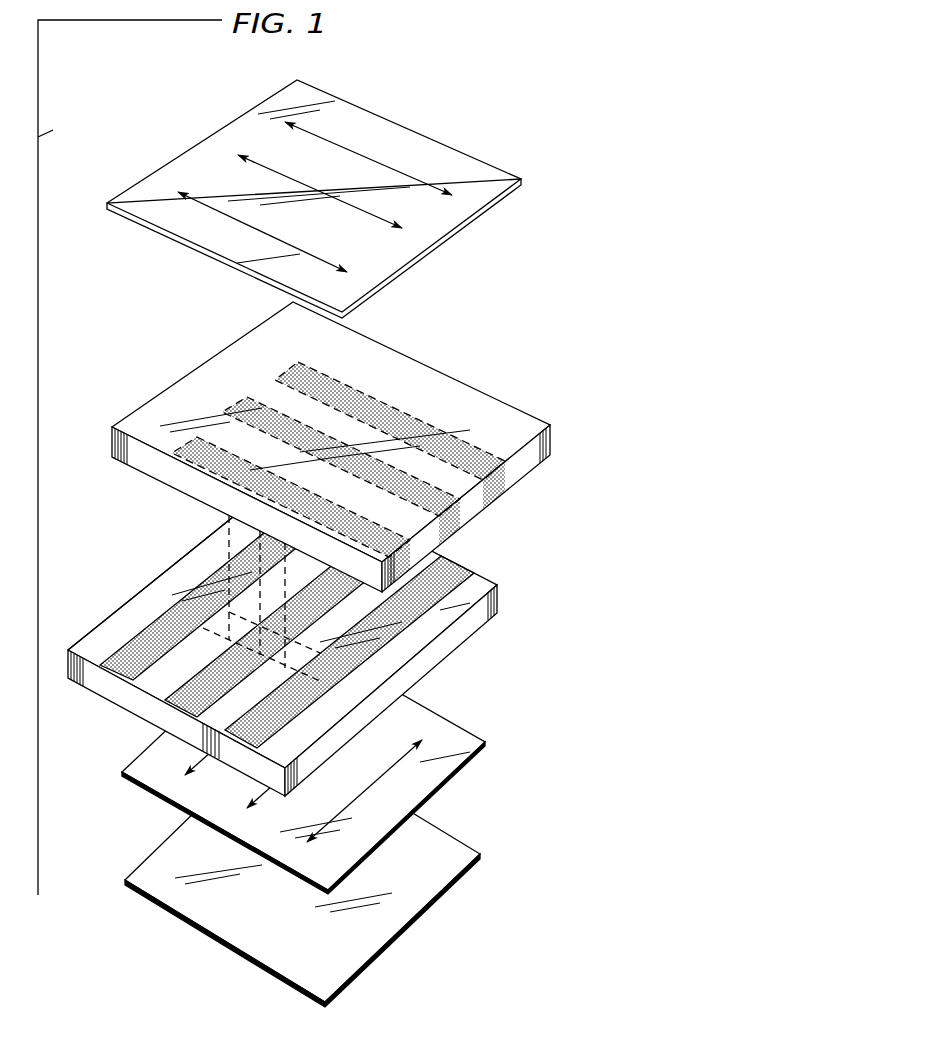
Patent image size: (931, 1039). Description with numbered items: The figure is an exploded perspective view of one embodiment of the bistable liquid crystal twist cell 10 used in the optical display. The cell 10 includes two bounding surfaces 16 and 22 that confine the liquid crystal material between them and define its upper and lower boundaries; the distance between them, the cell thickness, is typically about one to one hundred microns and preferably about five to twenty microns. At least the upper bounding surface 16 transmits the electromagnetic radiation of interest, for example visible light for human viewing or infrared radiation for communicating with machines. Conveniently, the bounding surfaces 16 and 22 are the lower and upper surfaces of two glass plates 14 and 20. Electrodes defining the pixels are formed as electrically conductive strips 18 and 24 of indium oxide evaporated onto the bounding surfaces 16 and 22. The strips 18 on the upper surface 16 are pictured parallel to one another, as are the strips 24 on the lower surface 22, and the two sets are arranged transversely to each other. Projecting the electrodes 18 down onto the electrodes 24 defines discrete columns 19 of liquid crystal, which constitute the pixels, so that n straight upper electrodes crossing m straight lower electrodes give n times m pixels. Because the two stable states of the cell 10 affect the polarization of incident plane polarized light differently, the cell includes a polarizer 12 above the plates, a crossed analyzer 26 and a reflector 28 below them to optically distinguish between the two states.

The bistable liquid crystal twist cell 10 is at (387, 97).
The polarizer 12 is at (404, 133).
The glass plate 14 is at (360, 447).
The bounding surface 16 is at (172, 487).
The electrically conductive strips 18 is at (197, 406).
The columns of liquid crystal 19 is at (227, 532).
The glass plate 20 is at (355, 635).
The bounding surface 22 is at (137, 615).
The electrically conductive strips 24 is at (428, 595).
The crossed analyzer 26 is at (428, 727).
The reflector 28 is at (433, 840).